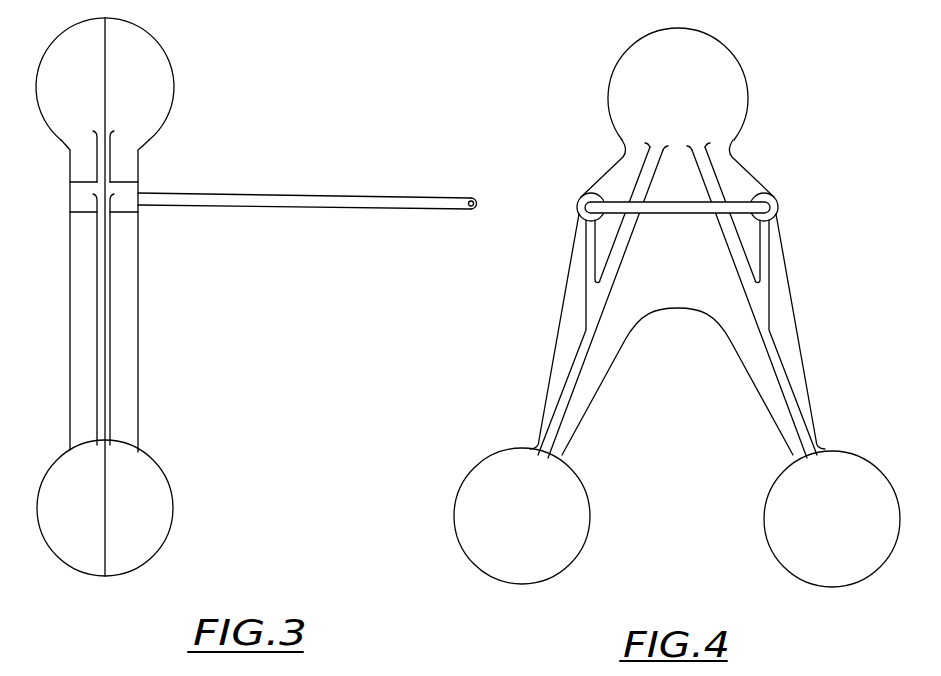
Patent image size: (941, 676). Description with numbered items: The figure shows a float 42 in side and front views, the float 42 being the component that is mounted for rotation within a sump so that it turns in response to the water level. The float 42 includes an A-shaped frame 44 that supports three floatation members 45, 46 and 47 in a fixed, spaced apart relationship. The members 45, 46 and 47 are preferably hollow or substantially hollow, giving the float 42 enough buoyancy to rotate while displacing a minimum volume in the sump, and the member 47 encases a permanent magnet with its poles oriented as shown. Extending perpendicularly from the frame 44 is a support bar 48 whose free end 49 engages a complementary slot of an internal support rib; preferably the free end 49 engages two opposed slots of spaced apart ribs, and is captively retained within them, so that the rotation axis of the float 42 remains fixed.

In FIG. 3, the float 42 is at (256, 297).
In FIG. 4, the float 42 is at (677, 307).
In FIG. 3, the A-shaped frame 44 is at (127, 297).
In FIG. 4, the A-shaped frame 44 is at (570, 295).
In FIG. 3, the floatation member 45 is at (140, 475).
In FIG. 4, the floatation member 45 is at (560, 490).
In FIG. 4, the floatation member 46 is at (778, 505).
In FIG. 3, the floatation member 47 is at (153, 70).
In FIG. 4, the floatation member 47 is at (723, 83).
In FIG. 3, the support bar 48 is at (320, 200).
In FIG. 4, the support bar 48 is at (695, 205).
In FIG. 3, the free end 49 is at (468, 198).
In FIG. 4, the free end 49 is at (617, 203).